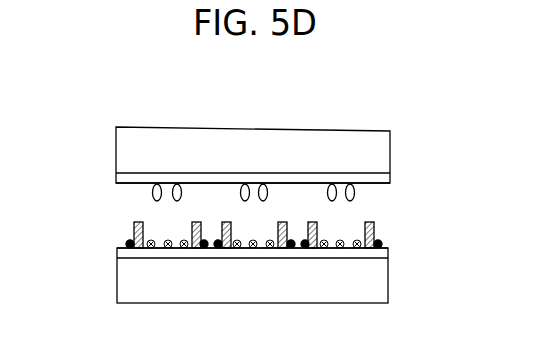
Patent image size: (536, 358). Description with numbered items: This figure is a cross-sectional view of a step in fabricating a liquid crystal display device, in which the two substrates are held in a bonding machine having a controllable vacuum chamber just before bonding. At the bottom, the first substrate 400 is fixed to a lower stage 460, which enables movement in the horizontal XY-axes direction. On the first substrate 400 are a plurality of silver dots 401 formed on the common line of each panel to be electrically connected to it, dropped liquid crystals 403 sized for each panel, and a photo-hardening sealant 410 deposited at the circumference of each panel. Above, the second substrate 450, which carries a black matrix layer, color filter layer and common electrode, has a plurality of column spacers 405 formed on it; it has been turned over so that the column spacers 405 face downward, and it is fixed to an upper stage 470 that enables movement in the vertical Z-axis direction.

The first substrate 400 is at (388, 252).
The silver dots 401 is at (127, 243).
The liquid crystals 403 is at (150, 249).
The column spacers 405 is at (349, 185).
The photo-hardening sealant 410 is at (135, 221).
The second substrate 450 is at (390, 181).
The lower stage 460 is at (388, 283).
The upper stage 470 is at (390, 152).